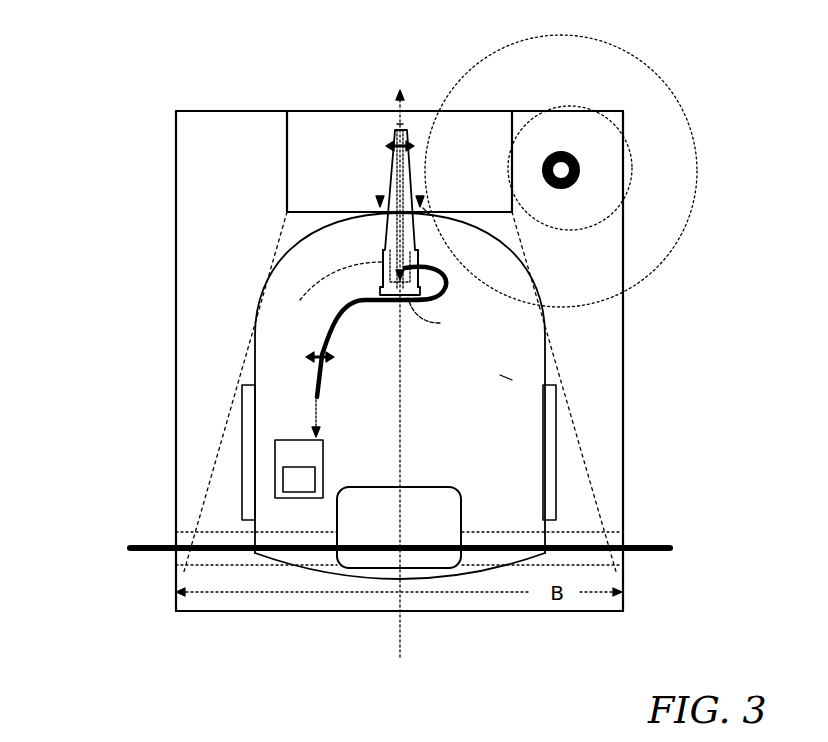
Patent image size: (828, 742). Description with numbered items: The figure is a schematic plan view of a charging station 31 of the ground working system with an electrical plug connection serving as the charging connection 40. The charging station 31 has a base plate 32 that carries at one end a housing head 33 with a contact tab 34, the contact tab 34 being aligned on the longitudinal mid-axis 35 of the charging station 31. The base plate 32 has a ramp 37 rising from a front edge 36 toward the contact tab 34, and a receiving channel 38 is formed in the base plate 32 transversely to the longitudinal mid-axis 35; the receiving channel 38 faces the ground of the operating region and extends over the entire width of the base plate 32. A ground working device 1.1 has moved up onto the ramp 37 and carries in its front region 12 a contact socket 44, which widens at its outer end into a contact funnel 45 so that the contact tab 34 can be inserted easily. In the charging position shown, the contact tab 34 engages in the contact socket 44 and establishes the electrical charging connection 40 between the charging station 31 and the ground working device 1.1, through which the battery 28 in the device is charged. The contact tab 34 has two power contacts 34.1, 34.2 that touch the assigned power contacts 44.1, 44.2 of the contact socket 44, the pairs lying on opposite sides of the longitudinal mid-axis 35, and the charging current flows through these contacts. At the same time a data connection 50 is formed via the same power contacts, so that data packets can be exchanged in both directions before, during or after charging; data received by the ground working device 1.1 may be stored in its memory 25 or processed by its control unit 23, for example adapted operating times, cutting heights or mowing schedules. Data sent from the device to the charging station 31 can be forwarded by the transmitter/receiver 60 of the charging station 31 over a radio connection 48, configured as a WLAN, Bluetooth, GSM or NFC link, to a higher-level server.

The ground working device 1.1 is at (512, 380).
The front region 12 is at (316, 212).
The control unit 23 is at (290, 455).
The memory 25 is at (297, 480).
The battery 28 is at (375, 548).
The charging station 31 is at (255, 170).
The base plate 32 is at (603, 437).
The housing head 33 is at (421, 198).
The contact tab 34 is at (405, 300).
The power contact 34.1 is at (322, 318).
The power contact 34.2 is at (440, 323).
The longitudinal mid-axis 35 is at (395, 624).
The front edge 36 is at (471, 612).
The ramp 37 is at (580, 466).
The receiving channel 38 is at (577, 540).
The charging connection 40 is at (379, 198).
The contact socket 44 is at (378, 252).
The power contact 44.1 is at (383, 260).
The power contact 44.2 is at (422, 262).
The contact funnel 45 is at (423, 208).
The radio connection 48 is at (650, 118).
The data connection 50 is at (400, 124).
The transmitter/receiver 60 is at (565, 160).